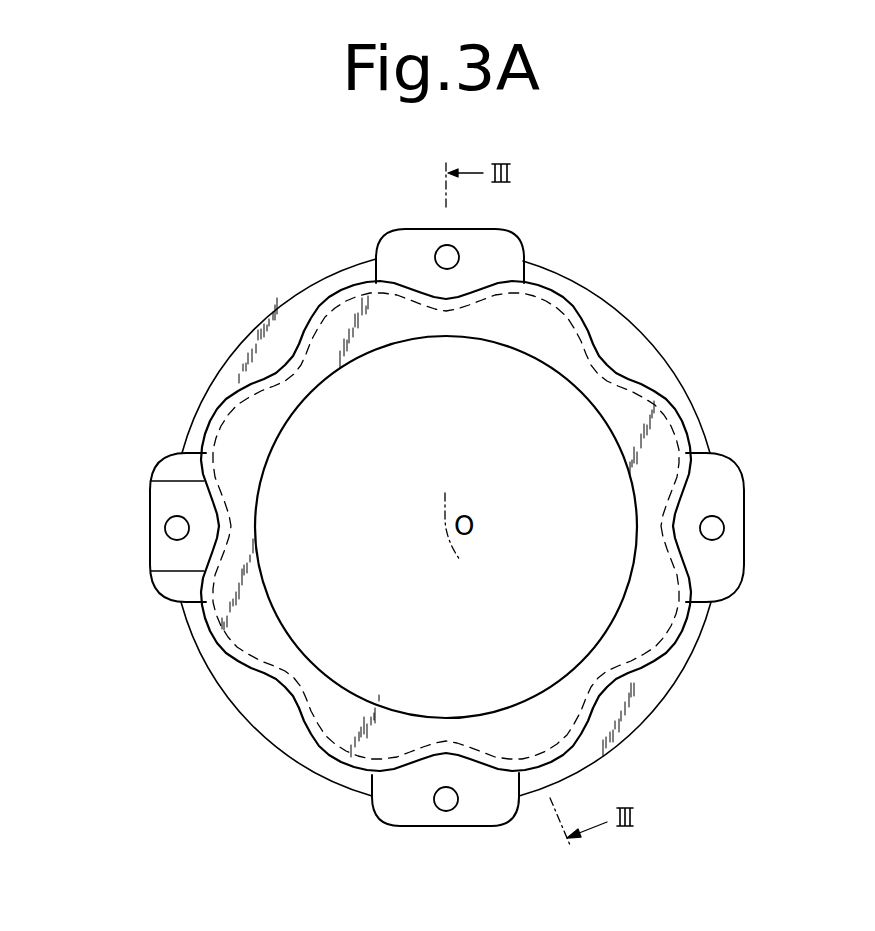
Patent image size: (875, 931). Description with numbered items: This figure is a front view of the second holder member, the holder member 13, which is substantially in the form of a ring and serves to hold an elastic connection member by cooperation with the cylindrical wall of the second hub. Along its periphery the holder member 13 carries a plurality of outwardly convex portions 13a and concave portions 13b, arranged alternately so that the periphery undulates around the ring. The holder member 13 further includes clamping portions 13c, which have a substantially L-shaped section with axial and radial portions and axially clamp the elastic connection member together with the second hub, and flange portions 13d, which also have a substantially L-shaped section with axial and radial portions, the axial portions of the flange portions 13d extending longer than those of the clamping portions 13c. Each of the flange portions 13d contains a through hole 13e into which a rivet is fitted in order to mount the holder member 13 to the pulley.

The holder member 13 is at (640, 308).
The outwardly convex portions 13a is at (557, 295).
The concave portions 13b is at (610, 367).
The clamping portions 13c is at (653, 710).
The flange portions 13d is at (503, 251).
The through holes 13e is at (440, 252).